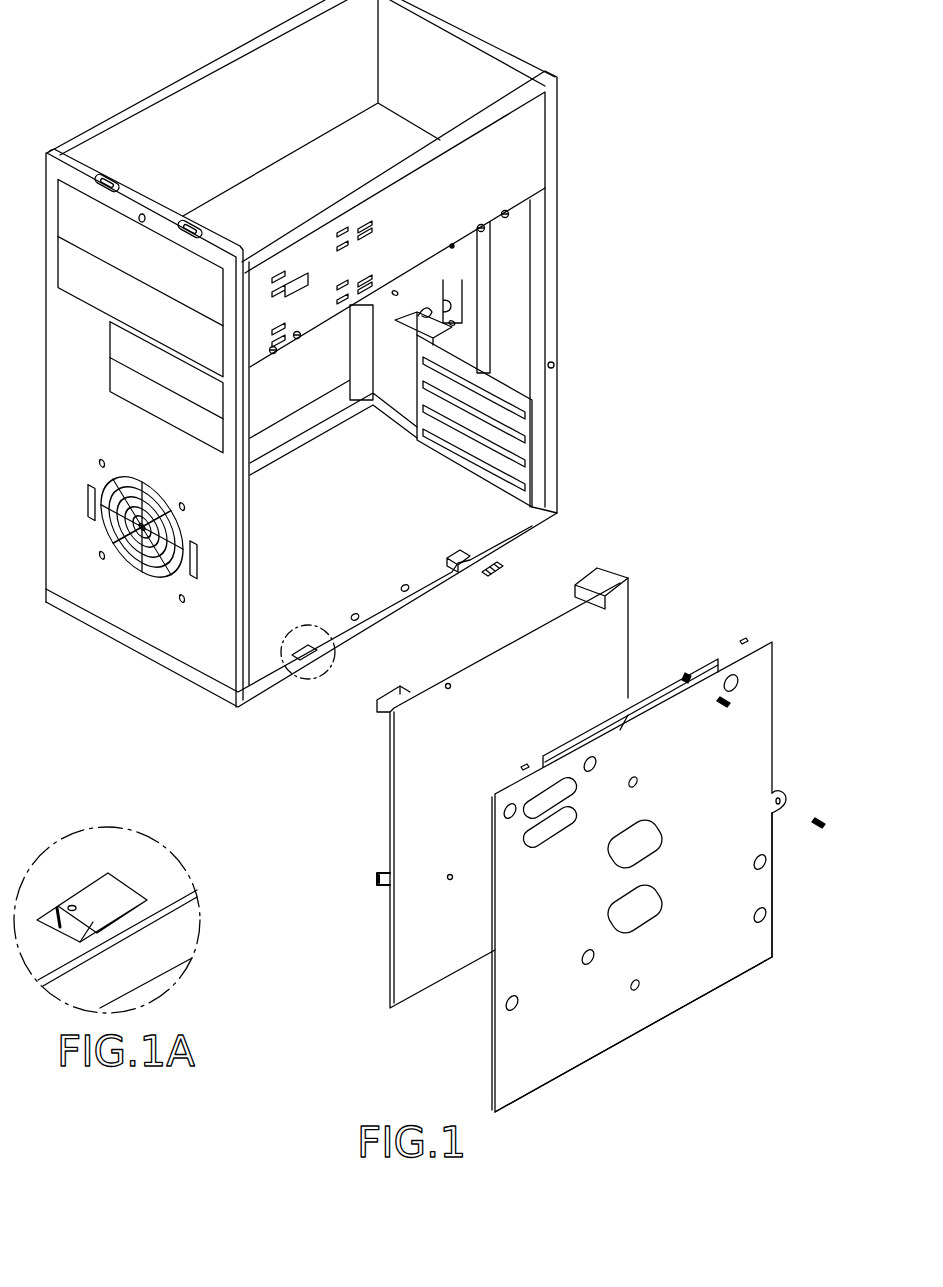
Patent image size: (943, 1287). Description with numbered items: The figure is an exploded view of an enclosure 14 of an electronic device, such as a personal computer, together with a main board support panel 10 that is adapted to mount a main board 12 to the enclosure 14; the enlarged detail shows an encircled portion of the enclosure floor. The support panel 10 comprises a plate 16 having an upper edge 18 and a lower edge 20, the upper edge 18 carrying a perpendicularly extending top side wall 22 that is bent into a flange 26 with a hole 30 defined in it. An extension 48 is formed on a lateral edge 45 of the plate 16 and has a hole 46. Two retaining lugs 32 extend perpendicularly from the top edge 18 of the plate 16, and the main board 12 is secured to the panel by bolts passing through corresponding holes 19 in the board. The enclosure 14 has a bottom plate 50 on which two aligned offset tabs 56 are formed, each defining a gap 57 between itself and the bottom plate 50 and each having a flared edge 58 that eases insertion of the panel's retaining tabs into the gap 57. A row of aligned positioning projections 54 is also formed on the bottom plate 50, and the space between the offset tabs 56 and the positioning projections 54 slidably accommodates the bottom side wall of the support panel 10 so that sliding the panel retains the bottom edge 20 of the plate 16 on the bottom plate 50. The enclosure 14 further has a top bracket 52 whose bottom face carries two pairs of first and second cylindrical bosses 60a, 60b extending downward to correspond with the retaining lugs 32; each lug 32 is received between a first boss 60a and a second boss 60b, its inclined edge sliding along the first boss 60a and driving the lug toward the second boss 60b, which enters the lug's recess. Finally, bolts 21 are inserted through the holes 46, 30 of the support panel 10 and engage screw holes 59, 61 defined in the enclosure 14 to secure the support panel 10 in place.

In FIG. 1, the main board support panel 10 is at (651, 851).
In FIG. 1, the main board 12 is at (633, 562).
In FIG. 1, the enclosure 14 is at (568, 108).
In FIG. 1, the plate 16 is at (688, 965).
In FIG. 1, the upper edge 18 is at (643, 716).
In FIG. 1, the hole 19 is at (448, 686).
In FIG. 1, the lower edge 20 is at (590, 1062).
In FIG. 1, the bolt 21 is at (730, 704).
In FIG. 1, the top side wall 22 is at (626, 718).
In FIG. 1, the bent flange 26 is at (577, 738).
In FIG. 1, the hole 30 is at (684, 676).
In FIG. 1, the retaining lug 32 is at (740, 638).
In FIG. 1, the lateral edge 45 is at (773, 924).
In FIG. 1, the hole 46 is at (786, 800).
In FIG. 1, the extension 48 is at (779, 795).
In FIG. 1, the bottom plate 50 is at (262, 620).
In FIG. 1, the top bracket 52 is at (493, 148).
In FIG. 1, the positioning projection 54 is at (480, 568).
In FIG. 1, the offset tab 56 is at (458, 553).
In FIG. 1A, the offset tab 56 is at (130, 871).
In FIG. 1A, the gap 57 is at (93, 922).
In FIG. 1A, the flared edge 58 is at (74, 905).
In FIG. 1, the screw hole 59 is at (555, 366).
In FIG. 1, the first cylindrical boss 60a is at (483, 226).
In FIG. 1, the second cylindrical boss 60b is at (506, 212).
In FIG. 1, the screw hole 61 is at (455, 246).